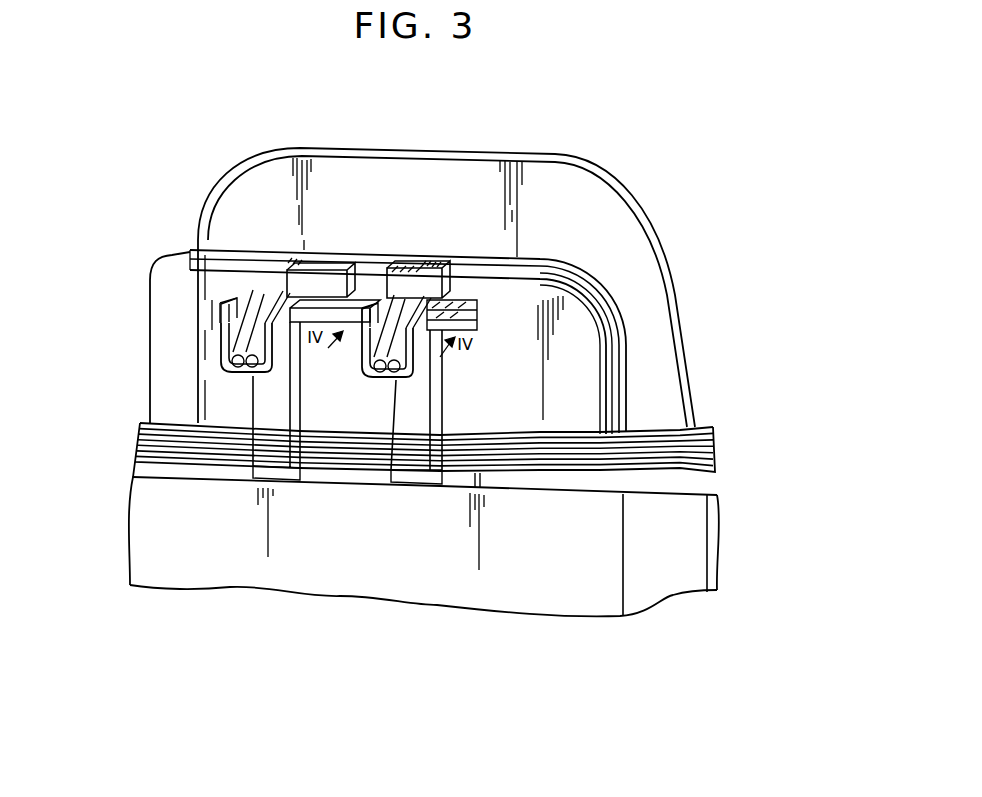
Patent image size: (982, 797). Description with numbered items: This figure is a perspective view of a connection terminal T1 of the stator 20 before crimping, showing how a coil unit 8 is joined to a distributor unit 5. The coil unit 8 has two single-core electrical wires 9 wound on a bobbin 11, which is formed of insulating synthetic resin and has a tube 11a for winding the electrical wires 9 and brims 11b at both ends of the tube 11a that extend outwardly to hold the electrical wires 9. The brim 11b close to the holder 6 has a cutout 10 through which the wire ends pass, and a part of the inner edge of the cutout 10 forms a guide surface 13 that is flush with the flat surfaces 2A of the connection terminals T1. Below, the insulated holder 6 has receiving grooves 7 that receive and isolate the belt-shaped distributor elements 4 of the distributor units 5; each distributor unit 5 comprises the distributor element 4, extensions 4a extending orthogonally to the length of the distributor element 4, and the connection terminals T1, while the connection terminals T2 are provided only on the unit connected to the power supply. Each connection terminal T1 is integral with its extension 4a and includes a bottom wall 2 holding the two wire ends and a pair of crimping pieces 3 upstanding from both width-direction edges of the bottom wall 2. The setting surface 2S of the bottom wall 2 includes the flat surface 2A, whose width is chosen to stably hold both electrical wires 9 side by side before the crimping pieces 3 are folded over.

The coil unit 8 is at (512, 148).
The stator 20 is at (833, 69).
The bobbin 11 is at (672, 124).
The tube 11a is at (514, 262).
The brim 11b is at (615, 275).
The connection terminal T1 is at (217, 310).
The connection terminal T2 is at (790, 472).
The electrical wire 9 is at (255, 316).
The cutout 10 is at (337, 265).
The guide surface 13 is at (305, 318).
The bottom wall 2 is at (262, 380).
The flat surface 2A is at (255, 365).
The setting surface 2S is at (505, 350).
The crimping piece 3 is at (243, 327).
The distributor element 4 is at (497, 455).
The extension 4a is at (277, 442).
The distributor unit 5 is at (807, 347).
The receiving groove 7 is at (557, 452).
The holder 6 is at (408, 560).